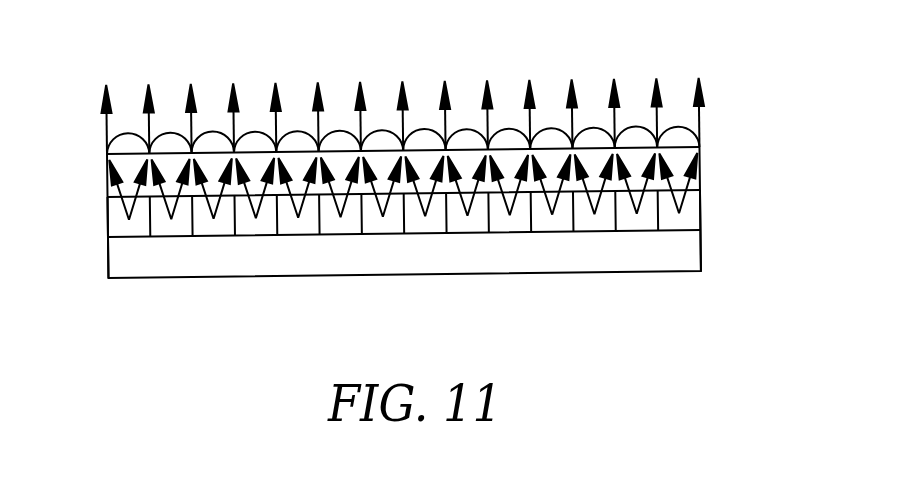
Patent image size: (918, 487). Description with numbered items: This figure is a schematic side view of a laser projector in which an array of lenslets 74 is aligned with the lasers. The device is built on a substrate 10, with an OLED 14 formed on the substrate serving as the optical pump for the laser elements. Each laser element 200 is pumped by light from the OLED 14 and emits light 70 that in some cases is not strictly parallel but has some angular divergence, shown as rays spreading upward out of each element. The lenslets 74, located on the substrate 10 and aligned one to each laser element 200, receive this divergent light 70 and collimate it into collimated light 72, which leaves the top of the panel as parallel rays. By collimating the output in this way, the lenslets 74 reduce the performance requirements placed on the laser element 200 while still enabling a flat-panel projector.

The substrate 10 is at (107, 174).
The OLED 14 is at (107, 263).
The divergent light 70 is at (680, 167).
The collimated light 72 is at (702, 98).
The lenslets 74 is at (675, 140).
The laser element 200 is at (643, 227).